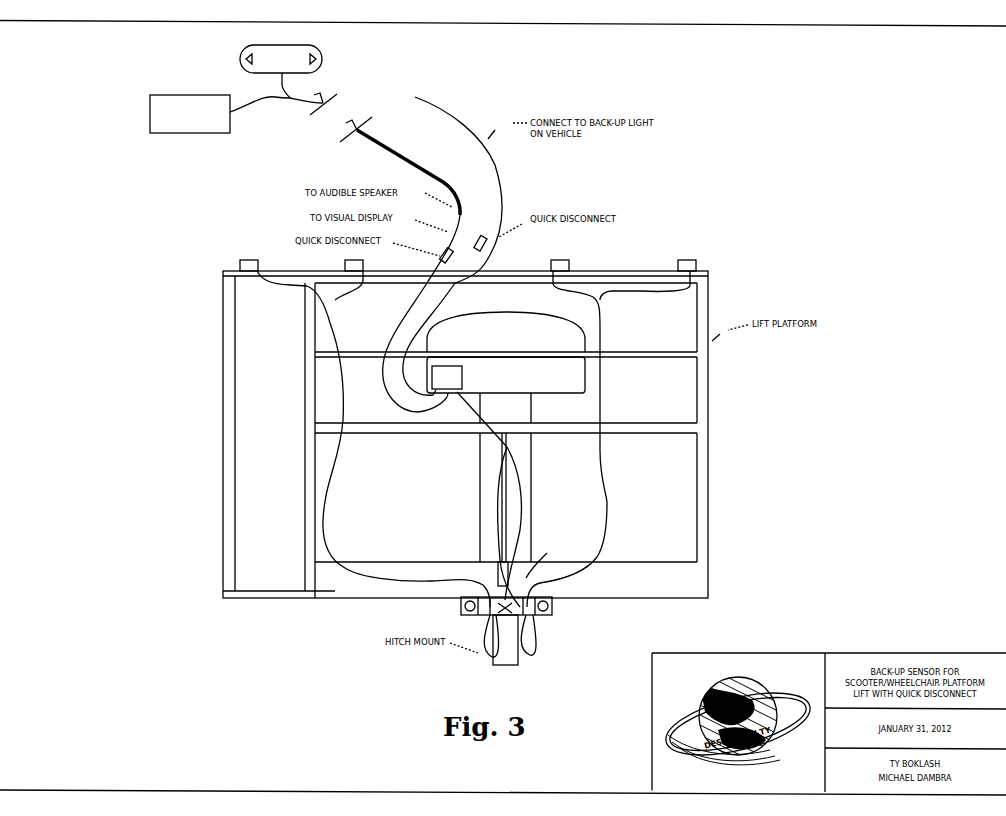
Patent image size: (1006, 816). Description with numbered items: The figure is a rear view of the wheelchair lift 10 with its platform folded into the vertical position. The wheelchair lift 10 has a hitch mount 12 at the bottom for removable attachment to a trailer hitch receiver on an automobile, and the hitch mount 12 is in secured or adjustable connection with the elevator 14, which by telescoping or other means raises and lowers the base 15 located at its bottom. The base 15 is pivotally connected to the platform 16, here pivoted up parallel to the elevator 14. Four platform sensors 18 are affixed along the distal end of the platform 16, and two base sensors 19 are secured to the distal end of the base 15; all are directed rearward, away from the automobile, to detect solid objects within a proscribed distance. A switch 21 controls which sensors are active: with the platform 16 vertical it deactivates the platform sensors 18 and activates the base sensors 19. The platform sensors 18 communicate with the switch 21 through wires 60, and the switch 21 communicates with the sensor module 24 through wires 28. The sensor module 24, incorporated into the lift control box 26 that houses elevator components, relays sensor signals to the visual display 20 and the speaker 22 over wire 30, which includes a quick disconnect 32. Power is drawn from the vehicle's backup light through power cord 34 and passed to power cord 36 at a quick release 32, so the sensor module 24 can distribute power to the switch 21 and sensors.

The wheelchair lift 10 is at (705, 173).
The hitch mount 12 is at (522, 656).
The elevator 14 is at (480, 483).
The base 15 is at (529, 527).
The platform 16 is at (708, 476).
The platform sensors 18 is at (244, 261).
The base sensors 19 is at (462, 605).
The visual display 20 is at (322, 59).
The switch 21 is at (497, 575).
The speaker 22 is at (175, 133).
The sensor module 24 is at (462, 382).
The lift control box 26 is at (585, 375).
The wires 28 is at (518, 538).
The wire 30 is at (400, 152).
The quick disconnect 32 is at (487, 262).
The power cord 34 is at (500, 169).
The power cord 36 is at (470, 273).
The wires 60 is at (333, 468).